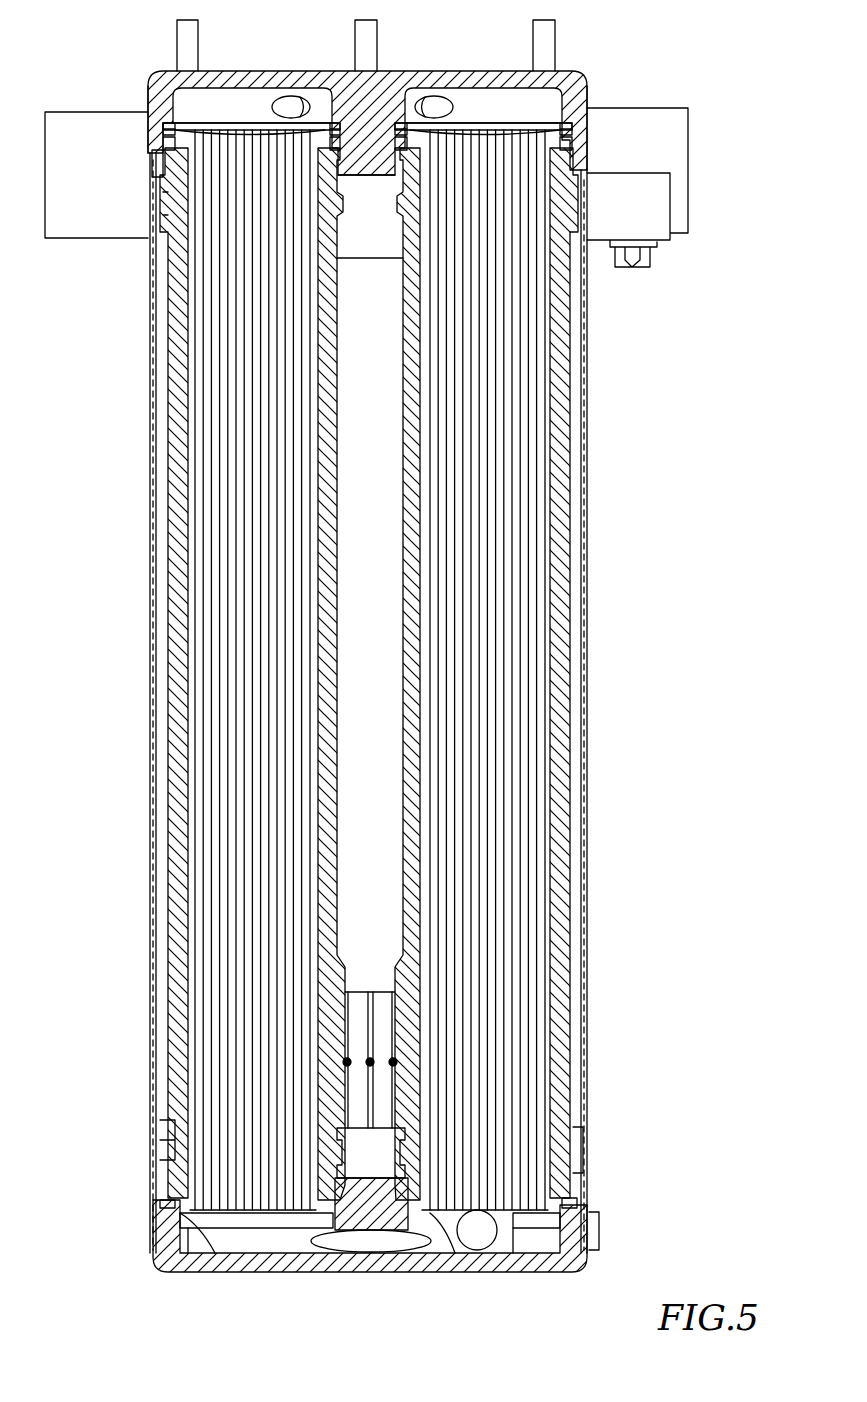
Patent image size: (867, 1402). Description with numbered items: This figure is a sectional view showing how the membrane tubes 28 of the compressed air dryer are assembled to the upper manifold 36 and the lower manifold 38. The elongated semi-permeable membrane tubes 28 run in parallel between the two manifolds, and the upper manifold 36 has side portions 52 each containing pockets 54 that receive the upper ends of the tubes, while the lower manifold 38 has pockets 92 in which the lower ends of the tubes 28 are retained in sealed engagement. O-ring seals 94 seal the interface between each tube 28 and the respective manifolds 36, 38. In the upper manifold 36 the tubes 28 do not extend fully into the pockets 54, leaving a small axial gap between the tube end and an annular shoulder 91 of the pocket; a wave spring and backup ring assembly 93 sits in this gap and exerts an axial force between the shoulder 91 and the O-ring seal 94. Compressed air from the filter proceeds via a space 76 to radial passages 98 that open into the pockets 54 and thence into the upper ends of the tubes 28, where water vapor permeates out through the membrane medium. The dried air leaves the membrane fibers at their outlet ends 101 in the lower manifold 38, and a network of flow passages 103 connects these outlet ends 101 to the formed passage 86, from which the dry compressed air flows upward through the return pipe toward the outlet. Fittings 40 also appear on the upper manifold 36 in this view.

The membrane tubes 28 is at (178, 660).
The upper manifold 36 is at (268, 72).
The lower manifold 38 is at (570, 1272).
The pipe connection 40 is at (176, 43).
The side portions 52 is at (424, 71).
The pockets 54 is at (213, 105).
The space 76 is at (540, 20).
The formed passage 86 is at (480, 1243).
The annular shoulder 91 is at (337, 115).
The pockets 92 is at (212, 1268).
The wave spring and backup ring assembly 93 is at (162, 129).
The O-ring seals 94 is at (162, 144).
The radial passages 98 is at (291, 100).
The outlet ends 101 is at (278, 1240).
The network of flow passages 103 is at (375, 1250).